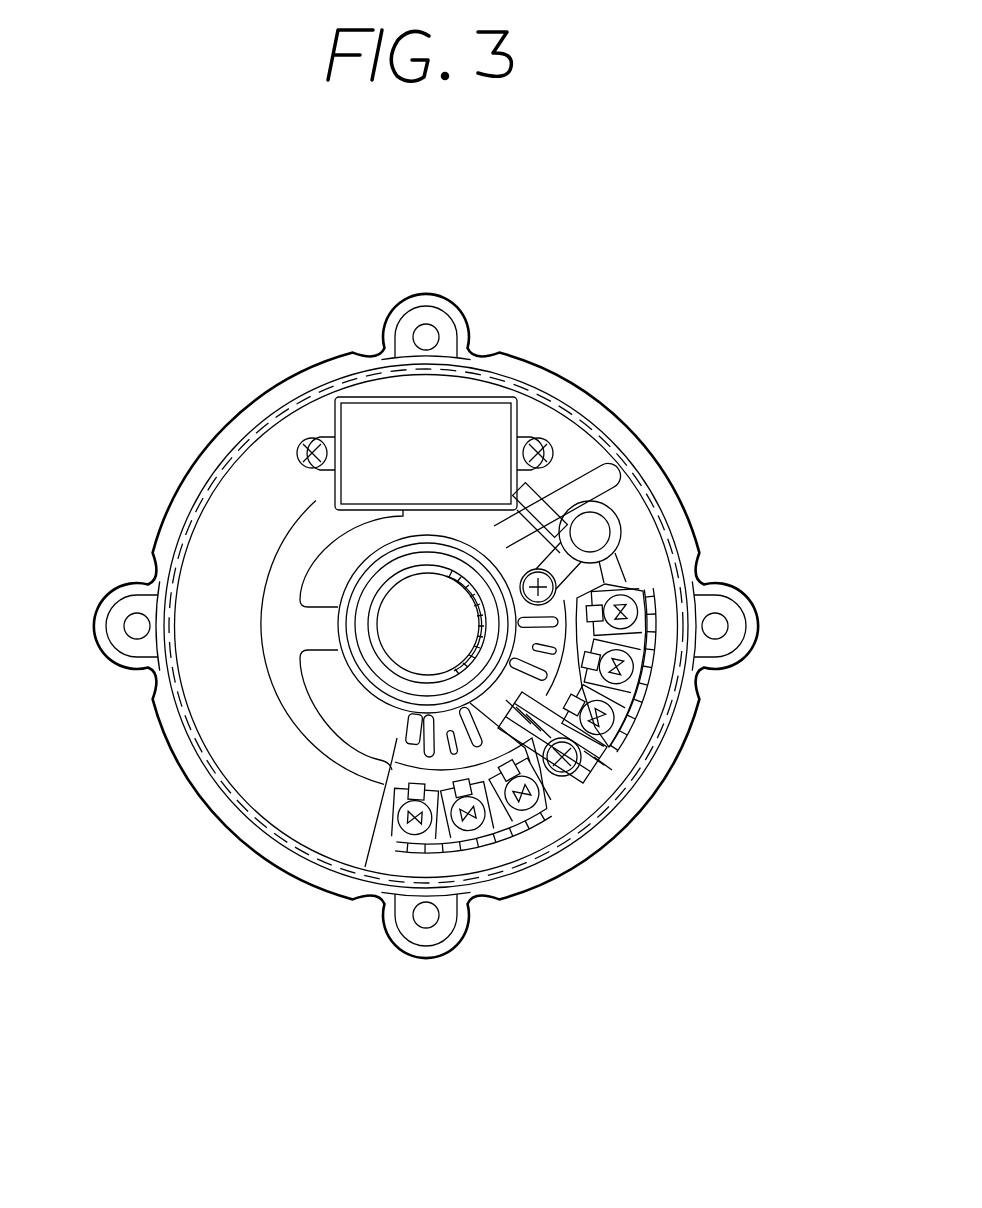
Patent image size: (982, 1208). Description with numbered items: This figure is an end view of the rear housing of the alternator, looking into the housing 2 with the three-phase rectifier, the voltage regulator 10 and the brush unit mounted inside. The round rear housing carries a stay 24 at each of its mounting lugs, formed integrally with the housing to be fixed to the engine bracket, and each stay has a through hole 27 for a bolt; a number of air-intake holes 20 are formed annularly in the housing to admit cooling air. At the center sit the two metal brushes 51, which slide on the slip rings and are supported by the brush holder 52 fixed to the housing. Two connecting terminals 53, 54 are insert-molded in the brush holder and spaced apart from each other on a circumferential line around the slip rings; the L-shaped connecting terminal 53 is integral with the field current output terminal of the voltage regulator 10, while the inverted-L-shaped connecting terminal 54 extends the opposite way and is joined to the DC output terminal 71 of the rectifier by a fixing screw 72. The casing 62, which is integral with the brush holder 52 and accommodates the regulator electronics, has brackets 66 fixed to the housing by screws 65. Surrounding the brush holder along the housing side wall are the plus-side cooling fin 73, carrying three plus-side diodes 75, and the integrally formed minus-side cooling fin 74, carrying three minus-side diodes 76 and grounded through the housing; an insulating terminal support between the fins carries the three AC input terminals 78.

The housing 2 is at (246, 433).
The voltage regulator 10 is at (439, 468).
The air-intake holes 20 is at (338, 697).
The stay 24 is at (446, 300).
The through hole 27 is at (425, 337).
The brushes 51 is at (468, 653).
The brush holder 52 is at (588, 472).
The connecting terminal 53 is at (548, 490).
The connecting terminal 54 is at (612, 520).
The casing 62 is at (471, 396).
The screws 65 is at (298, 448).
The brackets 66 is at (326, 437).
The DC output terminal 71 is at (575, 545).
The fixing screw 72 is at (556, 585).
The plus-side cooling fin 73 is at (620, 742).
The minus-side cooling fin 74 is at (540, 810).
The plus-side diodes 75 is at (611, 722).
The minus-side diodes 76 is at (530, 795).
The AC input terminals 78 is at (640, 587).